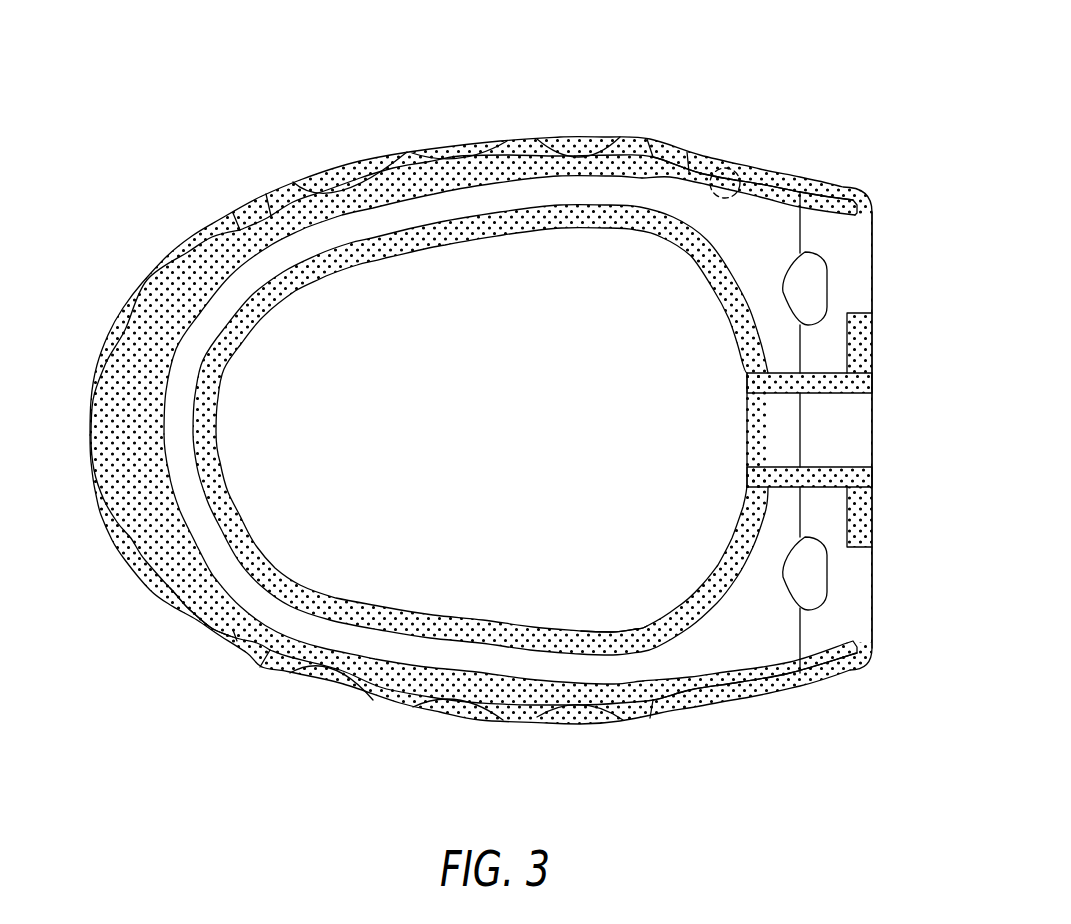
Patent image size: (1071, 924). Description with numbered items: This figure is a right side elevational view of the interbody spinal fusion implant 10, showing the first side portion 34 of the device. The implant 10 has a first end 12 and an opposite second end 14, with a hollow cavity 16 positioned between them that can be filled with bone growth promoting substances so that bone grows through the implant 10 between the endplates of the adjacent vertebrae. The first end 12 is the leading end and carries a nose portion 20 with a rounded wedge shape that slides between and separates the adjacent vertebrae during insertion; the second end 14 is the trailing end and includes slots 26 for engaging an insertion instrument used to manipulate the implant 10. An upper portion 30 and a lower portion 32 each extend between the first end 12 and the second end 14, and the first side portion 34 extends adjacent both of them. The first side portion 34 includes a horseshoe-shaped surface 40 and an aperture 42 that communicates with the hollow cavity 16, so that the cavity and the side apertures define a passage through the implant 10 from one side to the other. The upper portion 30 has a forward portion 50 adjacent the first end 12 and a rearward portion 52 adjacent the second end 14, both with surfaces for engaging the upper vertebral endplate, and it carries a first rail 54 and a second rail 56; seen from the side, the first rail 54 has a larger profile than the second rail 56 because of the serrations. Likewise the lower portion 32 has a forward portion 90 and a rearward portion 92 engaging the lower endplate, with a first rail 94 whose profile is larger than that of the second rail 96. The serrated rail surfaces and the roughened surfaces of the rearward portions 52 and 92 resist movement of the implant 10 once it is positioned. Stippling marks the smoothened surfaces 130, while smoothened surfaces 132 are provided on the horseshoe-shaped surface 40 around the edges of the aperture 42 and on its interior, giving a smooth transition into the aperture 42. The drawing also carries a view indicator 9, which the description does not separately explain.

The detail view reference 9 is at (752, 152).
The implant 10 is at (187, 192).
The first end 12 is at (123, 545).
The second end 14 is at (872, 597).
The hollow cavity 16 is at (562, 455).
The nose portion 20 is at (100, 420).
The slots 26 is at (823, 467).
The upper portion 30 is at (448, 143).
The lower portion 32 is at (497, 721).
The first side portion 34 is at (540, 677).
The horseshoe-shaped surface 40 is at (677, 650).
The aperture 42 is at (620, 633).
The forward portion 50 is at (190, 248).
The rearward portion 52 is at (825, 182).
The first rail 54 is at (330, 180).
The second rail 56 is at (280, 193).
The forward portion 90 is at (200, 627).
The rearward portion 92 is at (820, 677).
The first rail 94 is at (340, 680).
The second rail 96 is at (400, 700).
The smoothened surfaces 130 is at (137, 348).
The smoothened surfaces 132 is at (512, 223).